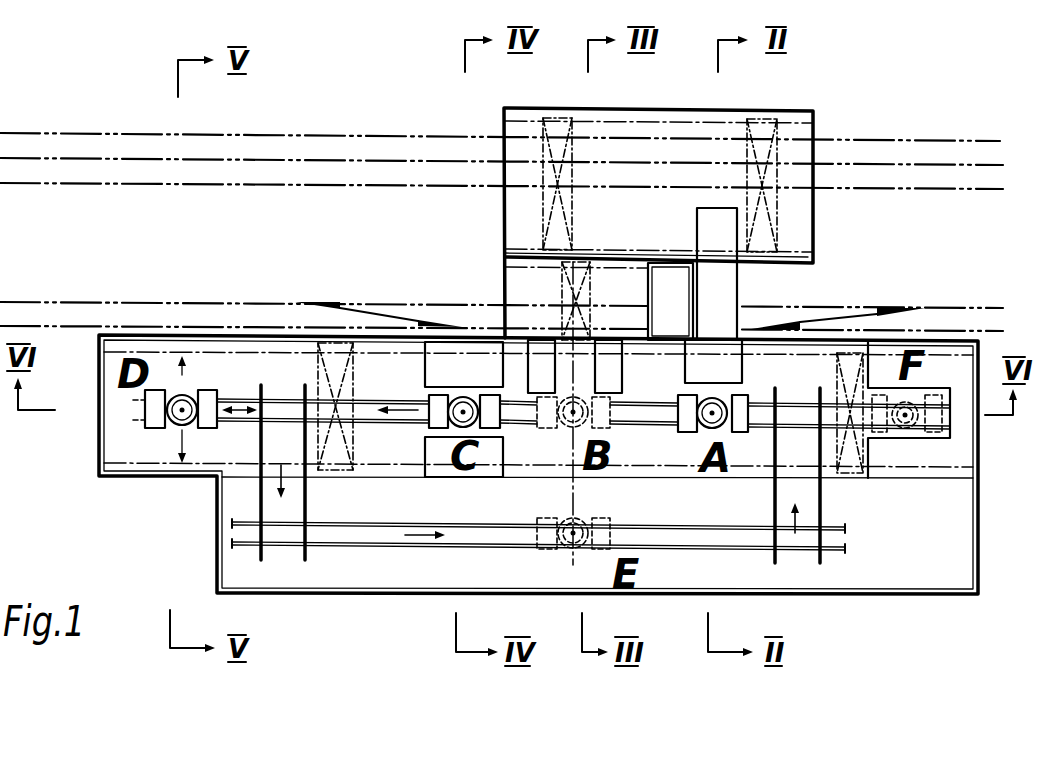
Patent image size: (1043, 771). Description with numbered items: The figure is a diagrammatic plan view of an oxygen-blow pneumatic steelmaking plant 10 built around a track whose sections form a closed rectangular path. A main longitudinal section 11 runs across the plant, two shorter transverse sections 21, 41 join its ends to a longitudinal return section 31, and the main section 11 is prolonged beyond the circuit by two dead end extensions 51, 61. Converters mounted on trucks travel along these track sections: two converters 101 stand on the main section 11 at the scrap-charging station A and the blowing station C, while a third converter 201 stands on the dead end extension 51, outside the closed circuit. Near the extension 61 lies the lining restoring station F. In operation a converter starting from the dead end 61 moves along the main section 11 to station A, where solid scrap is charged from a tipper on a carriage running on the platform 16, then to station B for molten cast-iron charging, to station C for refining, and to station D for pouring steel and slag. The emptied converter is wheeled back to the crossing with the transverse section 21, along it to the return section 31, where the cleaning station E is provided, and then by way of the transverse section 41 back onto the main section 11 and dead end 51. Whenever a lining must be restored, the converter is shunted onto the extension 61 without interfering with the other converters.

The machine frame housing 10 is at (688, 565).
The main longitudinal section 11 is at (655, 403).
The platform 16 is at (722, 288).
The transverse section 21 is at (305, 430).
The longitudinal return section 31 is at (378, 527).
The transverse section 41 is at (775, 485).
The dead end extension 51 is at (241, 399).
The dead end extension 61 is at (843, 420).
The converter 101 is at (427, 415).
The converter 201 is at (172, 423).